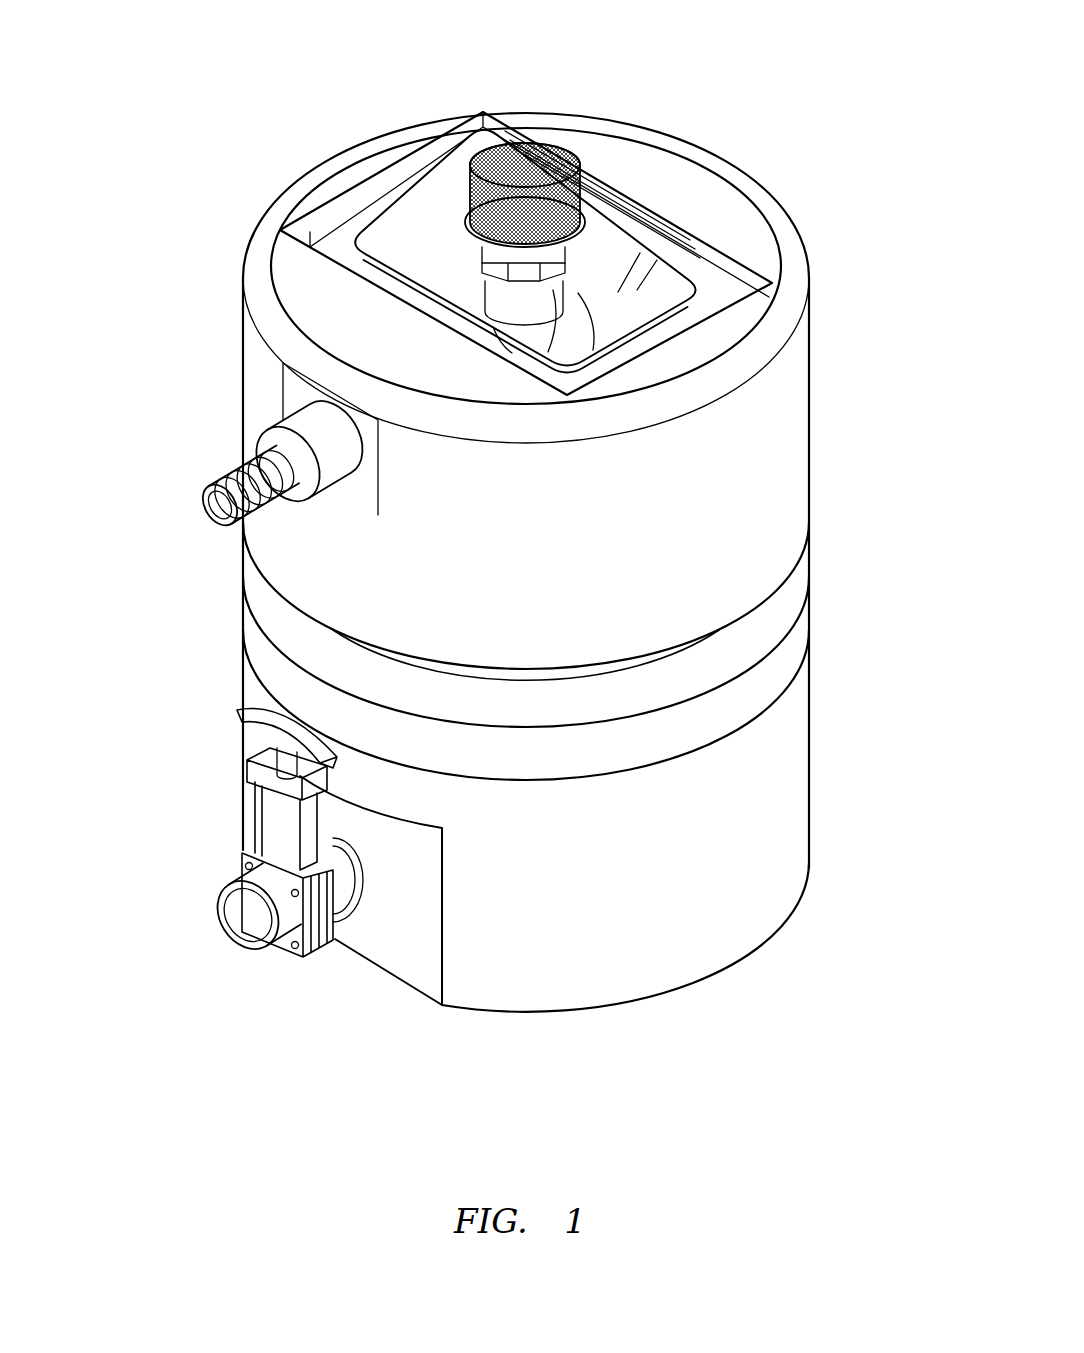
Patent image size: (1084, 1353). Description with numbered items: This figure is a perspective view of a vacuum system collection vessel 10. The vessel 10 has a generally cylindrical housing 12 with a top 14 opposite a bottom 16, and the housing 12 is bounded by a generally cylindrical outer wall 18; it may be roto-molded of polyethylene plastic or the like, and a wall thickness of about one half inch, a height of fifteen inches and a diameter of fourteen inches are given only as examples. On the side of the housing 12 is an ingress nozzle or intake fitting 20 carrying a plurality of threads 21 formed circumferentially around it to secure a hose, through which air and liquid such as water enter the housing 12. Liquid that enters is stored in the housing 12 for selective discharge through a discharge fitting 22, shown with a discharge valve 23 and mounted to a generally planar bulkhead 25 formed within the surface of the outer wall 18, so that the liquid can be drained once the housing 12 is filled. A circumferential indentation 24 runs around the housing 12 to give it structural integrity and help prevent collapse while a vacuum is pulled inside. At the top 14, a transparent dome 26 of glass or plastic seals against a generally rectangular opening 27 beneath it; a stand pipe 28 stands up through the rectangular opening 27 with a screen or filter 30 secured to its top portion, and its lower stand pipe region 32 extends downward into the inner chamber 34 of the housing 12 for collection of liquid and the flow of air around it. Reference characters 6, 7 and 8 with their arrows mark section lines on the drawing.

The section line 6- 6 is at (197, 538).
The section line 7- 7 is at (225, 217).
The section line 8- 8 is at (153, 232).
The vacuum system collection vessel 10 is at (862, 350).
The housing 12 is at (797, 483).
The top 14 is at (719, 103).
The bottom 16 is at (666, 1030).
The outer wall 18 is at (782, 866).
The intake fitting 20 is at (227, 473).
The threads 21 is at (268, 468).
The discharge fitting 22 is at (280, 928).
The discharge valve 23 is at (283, 748).
The circumferential indentation 24 is at (748, 608).
The bulkhead 25 is at (418, 973).
The transparent dome 26 is at (612, 147).
The rectangular opening 27 is at (657, 220).
The stand pipe 28 is at (490, 280).
The filter 30 is at (523, 143).
The lower stand pipe region 32 is at (503, 327).
The inner chamber 34 is at (651, 297).